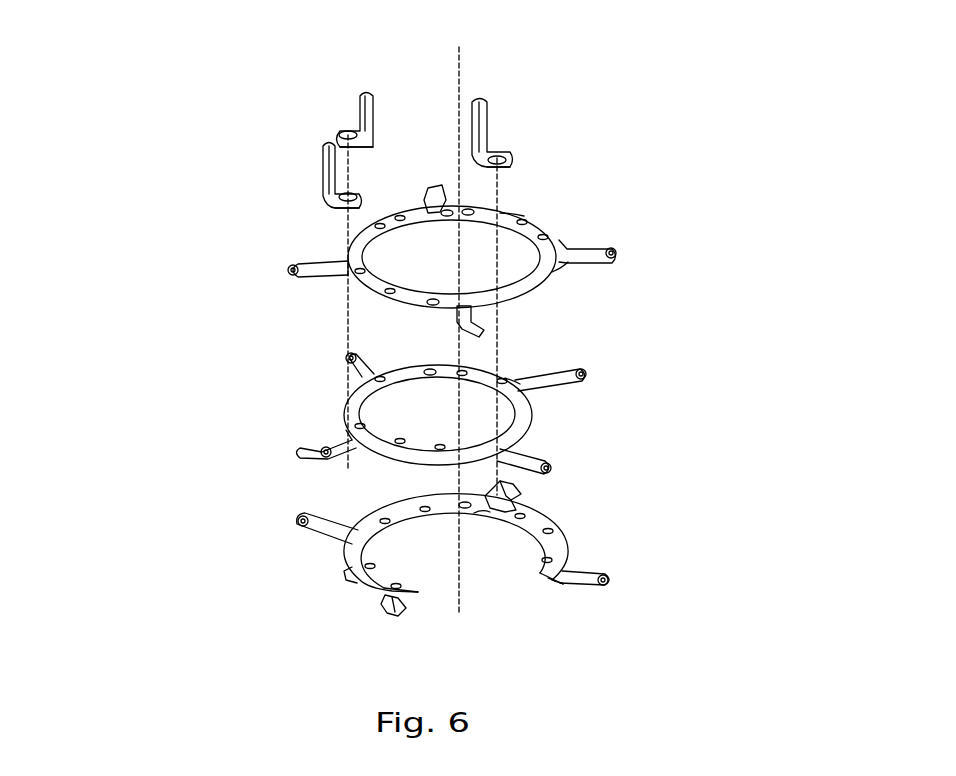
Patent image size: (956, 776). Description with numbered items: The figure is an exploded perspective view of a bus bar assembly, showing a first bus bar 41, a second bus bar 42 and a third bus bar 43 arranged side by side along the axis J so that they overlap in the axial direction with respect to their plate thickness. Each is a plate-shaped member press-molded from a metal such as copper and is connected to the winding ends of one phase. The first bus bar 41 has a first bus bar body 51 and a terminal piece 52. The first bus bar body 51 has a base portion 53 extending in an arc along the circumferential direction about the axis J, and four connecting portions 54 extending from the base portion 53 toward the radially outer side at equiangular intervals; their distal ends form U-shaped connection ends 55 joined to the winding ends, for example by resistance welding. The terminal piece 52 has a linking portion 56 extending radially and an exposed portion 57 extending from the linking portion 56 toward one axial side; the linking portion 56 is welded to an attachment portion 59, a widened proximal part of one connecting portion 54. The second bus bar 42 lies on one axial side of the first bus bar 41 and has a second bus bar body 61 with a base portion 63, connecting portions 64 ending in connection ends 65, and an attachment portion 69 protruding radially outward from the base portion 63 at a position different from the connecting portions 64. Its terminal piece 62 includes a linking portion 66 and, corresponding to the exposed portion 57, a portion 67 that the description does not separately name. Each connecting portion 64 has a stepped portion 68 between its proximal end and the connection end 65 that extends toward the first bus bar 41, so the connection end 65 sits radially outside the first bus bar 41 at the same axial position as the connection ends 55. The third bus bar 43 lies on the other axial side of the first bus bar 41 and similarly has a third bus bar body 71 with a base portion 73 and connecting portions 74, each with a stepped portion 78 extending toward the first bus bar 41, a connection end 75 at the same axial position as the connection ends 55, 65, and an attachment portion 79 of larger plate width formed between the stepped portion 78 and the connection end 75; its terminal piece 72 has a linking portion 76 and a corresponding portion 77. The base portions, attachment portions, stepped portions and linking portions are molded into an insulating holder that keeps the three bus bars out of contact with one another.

The axis J is at (460, 65).
The first bus bar 41 is at (638, 348).
The second bus bar 42 is at (638, 213).
The third bus bar 43 is at (527, 534).
The first bus bar body 51 is at (584, 335).
The terminal piece 52 is at (252, 168).
The base portion 53 is at (508, 373).
The connecting portion 54 is at (347, 458).
The connection end 55 is at (328, 449).
The linking portion 56 is at (337, 207).
The exposed portion 57 is at (323, 160).
The attachment portion 59 is at (347, 442).
The second bus bar body 61 is at (584, 185).
The terminal piece 62 is at (278, 113).
The base portion 63 is at (512, 217).
The connecting portion 64 is at (587, 249).
The connection end 65 is at (614, 254).
The linking portion 66 is at (338, 132).
The clip arm 67 is at (360, 99).
The stepped portion 68 is at (568, 263).
The attachment portion 69 is at (345, 233).
The third bus bar body 71 is at (530, 521).
The terminal piece 72 is at (584, 128).
The base portion 73 is at (538, 524).
The connecting portion 74 is at (598, 583).
The connection end 75 is at (607, 577).
The linking portion 76 is at (502, 160).
The clip arm 77 is at (490, 117).
The stepped portion 78 is at (563, 582).
The attachment portion 79 is at (480, 514).